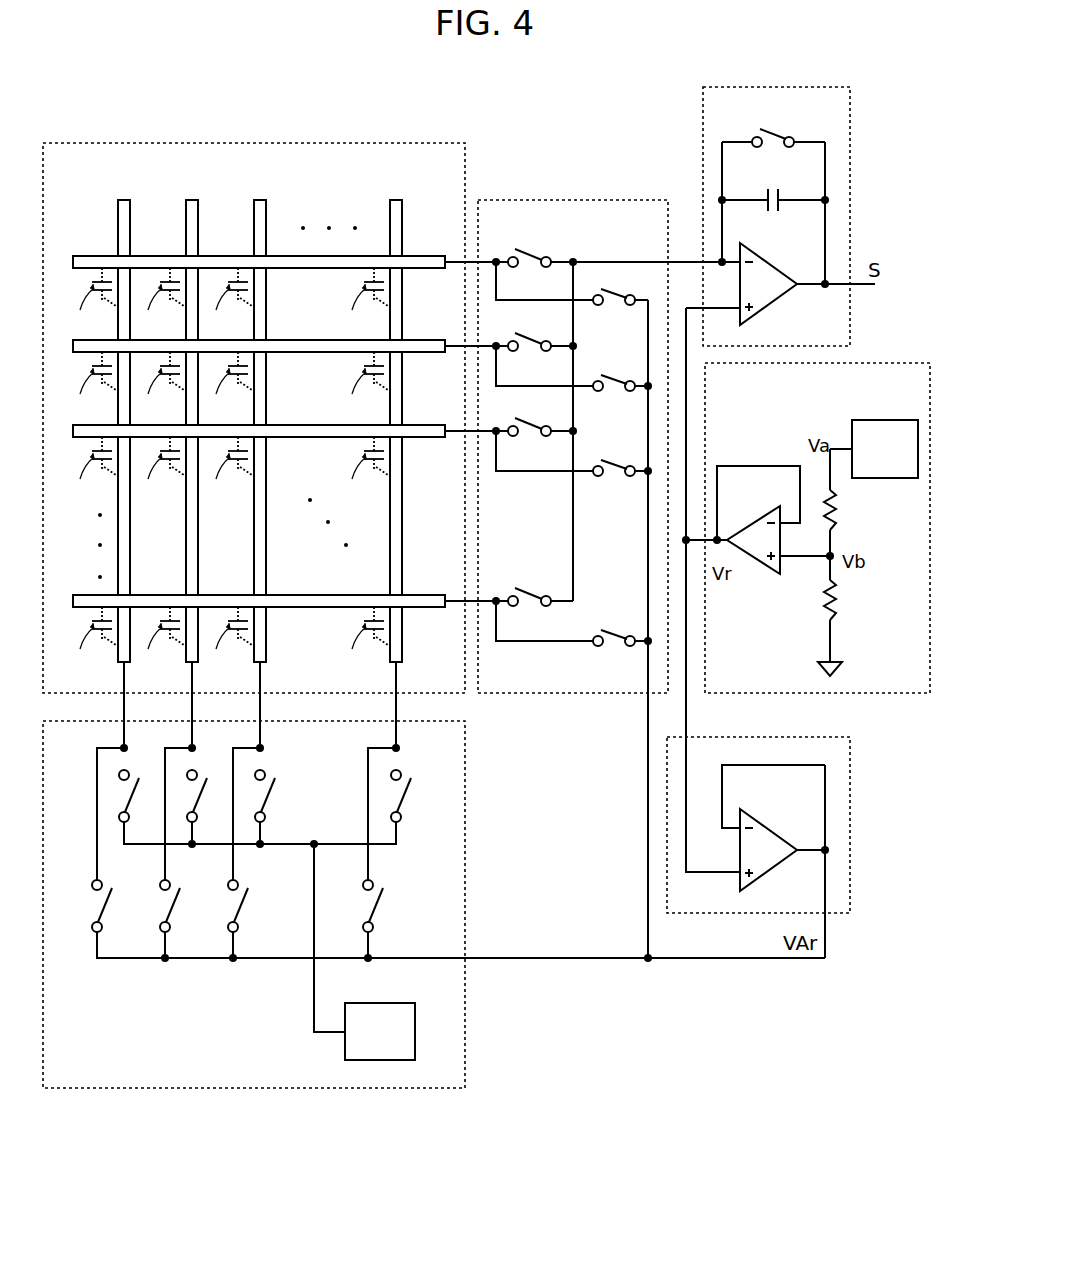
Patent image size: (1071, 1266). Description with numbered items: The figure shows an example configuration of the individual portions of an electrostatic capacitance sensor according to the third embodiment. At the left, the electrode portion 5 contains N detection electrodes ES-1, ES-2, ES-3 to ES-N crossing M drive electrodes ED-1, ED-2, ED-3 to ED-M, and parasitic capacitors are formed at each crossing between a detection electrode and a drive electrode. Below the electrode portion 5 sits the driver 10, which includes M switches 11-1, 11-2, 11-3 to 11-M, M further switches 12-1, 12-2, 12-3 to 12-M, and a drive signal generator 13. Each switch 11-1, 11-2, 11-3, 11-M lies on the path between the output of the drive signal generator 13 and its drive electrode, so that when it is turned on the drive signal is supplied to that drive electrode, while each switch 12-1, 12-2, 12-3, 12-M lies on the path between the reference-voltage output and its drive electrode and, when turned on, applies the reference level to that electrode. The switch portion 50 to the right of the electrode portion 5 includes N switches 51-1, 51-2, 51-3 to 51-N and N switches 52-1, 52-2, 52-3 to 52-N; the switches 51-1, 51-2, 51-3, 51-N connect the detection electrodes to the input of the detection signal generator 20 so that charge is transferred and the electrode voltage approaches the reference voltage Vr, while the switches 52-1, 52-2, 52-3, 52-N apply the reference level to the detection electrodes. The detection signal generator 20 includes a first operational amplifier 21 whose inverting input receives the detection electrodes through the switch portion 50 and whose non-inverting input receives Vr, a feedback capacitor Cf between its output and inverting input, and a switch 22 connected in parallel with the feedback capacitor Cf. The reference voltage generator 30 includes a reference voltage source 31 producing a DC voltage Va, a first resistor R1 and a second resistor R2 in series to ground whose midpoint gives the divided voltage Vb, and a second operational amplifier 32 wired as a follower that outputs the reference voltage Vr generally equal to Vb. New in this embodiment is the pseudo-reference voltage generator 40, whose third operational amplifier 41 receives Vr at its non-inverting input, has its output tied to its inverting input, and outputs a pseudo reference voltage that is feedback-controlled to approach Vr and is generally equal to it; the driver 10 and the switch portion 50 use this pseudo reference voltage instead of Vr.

The electrode portion 5 is at (468, 169).
The driver 10 is at (468, 846).
The switch 11-1 is at (133, 768).
The switch 11-2 is at (201, 768).
The switch 11-3 is at (269, 768).
The switch 11-M is at (405, 768).
The switch 12-1 is at (105, 892).
The switch 12-2 is at (173, 892).
The switch 12-3 is at (241, 892).
The switch 12-M is at (378, 892).
The drive signal generator 13 is at (417, 1020).
The detection signal generator 20 is at (855, 149).
The first operational amplifier 21 is at (770, 258).
The switch 22 is at (785, 131).
The feedback capacitor Cf is at (773, 196).
The reference voltage generator 30 is at (873, 351).
The reference voltage source 31 is at (840, 422).
The second operational amplifier 32 is at (772, 572).
The first resistor R1 is at (839, 526).
The second resistor R2 is at (839, 617).
The pseudo-reference voltage generator 40 is at (852, 830).
The third operational amplifier 41 is at (770, 828).
The switch portion 50 is at (570, 198).
The switch 51-1 is at (517, 254).
The switch 51-2 is at (517, 338).
The switch 51-3 is at (517, 423).
The switch 51-N is at (523, 592).
The switch 52-1 is at (600, 298).
The switch 52-2 is at (600, 381).
The switch 52-3 is at (606, 456).
The switch 52-N is at (607, 633).
The drive electrode ED-1 is at (125, 198).
The drive electrode ED-2 is at (193, 198).
The drive electrode ED-3 is at (261, 198).
The drive electrode ED-M is at (397, 198).
The detection electrode ES-1 is at (445, 255).
The detection electrode ES-2 is at (445, 340).
The detection electrode ES-3 is at (445, 424).
The detection electrode ES-N is at (445, 594).